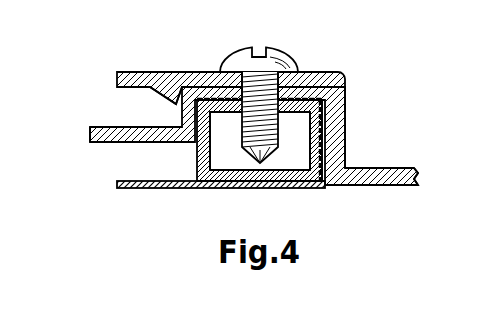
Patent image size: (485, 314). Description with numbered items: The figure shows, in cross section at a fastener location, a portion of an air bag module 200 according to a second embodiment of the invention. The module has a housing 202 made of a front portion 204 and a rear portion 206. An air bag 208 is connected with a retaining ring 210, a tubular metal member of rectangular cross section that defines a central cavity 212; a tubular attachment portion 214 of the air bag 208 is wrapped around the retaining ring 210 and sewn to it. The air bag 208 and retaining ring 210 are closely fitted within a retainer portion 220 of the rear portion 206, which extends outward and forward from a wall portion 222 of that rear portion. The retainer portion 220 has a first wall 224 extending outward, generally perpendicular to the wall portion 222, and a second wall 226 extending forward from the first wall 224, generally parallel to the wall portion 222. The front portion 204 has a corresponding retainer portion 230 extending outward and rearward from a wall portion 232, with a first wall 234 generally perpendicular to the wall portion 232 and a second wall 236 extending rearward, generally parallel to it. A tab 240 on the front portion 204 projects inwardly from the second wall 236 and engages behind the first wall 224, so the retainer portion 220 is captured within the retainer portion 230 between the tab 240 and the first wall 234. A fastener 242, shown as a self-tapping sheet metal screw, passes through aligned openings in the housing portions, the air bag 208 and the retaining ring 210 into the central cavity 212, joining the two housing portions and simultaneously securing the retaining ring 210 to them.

The air bag module 200 is at (257, 150).
The housing 202 is at (388, 82).
The front portion 204 is at (400, 168).
The rear portion 206 is at (88, 146).
The air bag 208 is at (117, 184).
The retaining ring 210 is at (305, 157).
The central cavity 212 is at (228, 153).
The tubular attachment portion 214 is at (213, 188).
The retainer portion 220 is at (168, 150).
The wall portion 222 is at (100, 127).
The first wall 224 is at (170, 115).
The second wall 226 is at (214, 72).
The retainer portion 230 is at (345, 72).
The wall portion 232 is at (380, 190).
The first wall 234 is at (345, 140).
The second wall 236 is at (313, 72).
The tab 240 is at (168, 72).
The fastener 242 is at (220, 70).